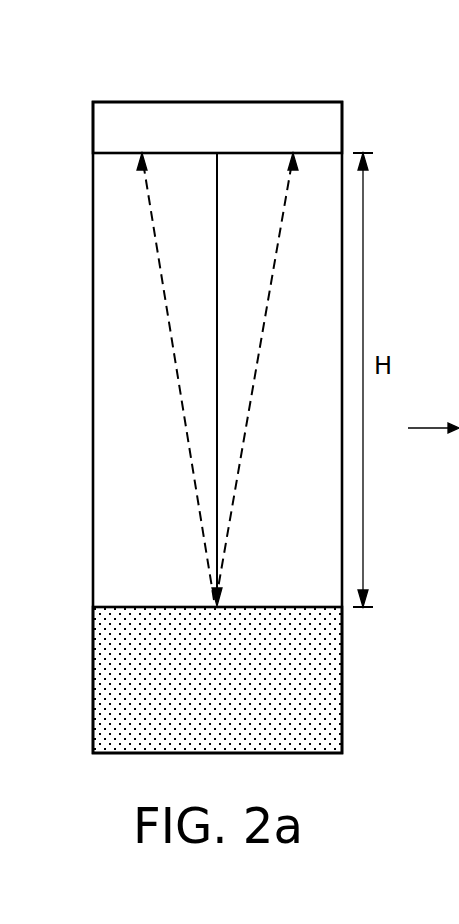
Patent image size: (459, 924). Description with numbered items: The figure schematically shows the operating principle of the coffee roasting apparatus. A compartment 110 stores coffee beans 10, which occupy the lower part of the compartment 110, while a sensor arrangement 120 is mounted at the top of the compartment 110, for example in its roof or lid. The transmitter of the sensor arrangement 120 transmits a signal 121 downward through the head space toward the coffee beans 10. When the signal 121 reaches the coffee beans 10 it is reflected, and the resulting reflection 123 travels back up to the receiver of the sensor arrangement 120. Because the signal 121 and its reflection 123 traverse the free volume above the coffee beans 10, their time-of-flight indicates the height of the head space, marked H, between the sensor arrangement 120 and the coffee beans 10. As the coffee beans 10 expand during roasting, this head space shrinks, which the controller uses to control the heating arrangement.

The coffee beans 10 is at (112, 668).
The compartment 110 is at (112, 443).
The sensor arrangement 120 is at (185, 113).
The signal 121 is at (216, 374).
The reflection 123 is at (153, 240).